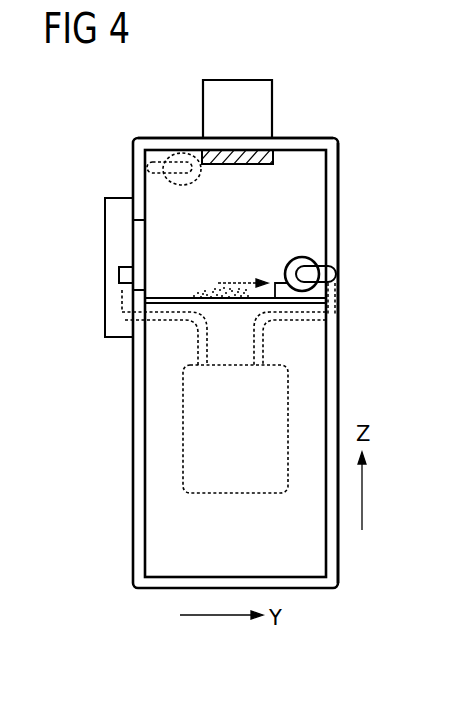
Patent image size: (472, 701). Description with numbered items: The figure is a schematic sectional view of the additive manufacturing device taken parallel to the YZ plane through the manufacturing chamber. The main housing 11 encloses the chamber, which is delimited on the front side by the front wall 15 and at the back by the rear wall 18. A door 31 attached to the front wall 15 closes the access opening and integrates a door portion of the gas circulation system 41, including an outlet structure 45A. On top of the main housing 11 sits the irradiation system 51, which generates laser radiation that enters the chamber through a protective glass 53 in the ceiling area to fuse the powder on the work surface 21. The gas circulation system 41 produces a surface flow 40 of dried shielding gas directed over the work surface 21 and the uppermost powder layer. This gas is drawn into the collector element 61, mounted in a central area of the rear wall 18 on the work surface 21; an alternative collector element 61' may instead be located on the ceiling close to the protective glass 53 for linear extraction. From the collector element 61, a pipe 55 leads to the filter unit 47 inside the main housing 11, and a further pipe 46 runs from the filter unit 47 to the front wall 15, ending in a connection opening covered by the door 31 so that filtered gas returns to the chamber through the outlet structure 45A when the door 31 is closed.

The main housing 11 is at (132, 525).
The front wall 15 is at (134, 158).
The rear wall 18 is at (339, 200).
The work surface 21 is at (166, 297).
The door 31 is at (121, 198).
The surface flow 40 is at (232, 283).
The gas circulation system 41 is at (237, 497).
The outlet structure 45A is at (119, 275).
The pipe 46 is at (172, 320).
The filter unit 47 is at (183, 432).
The irradiation system 51 is at (263, 92).
The protective glass 53 is at (263, 165).
The pipe 55 is at (302, 322).
The collector element 61 is at (310, 241).
The collector element 61' is at (172, 131).